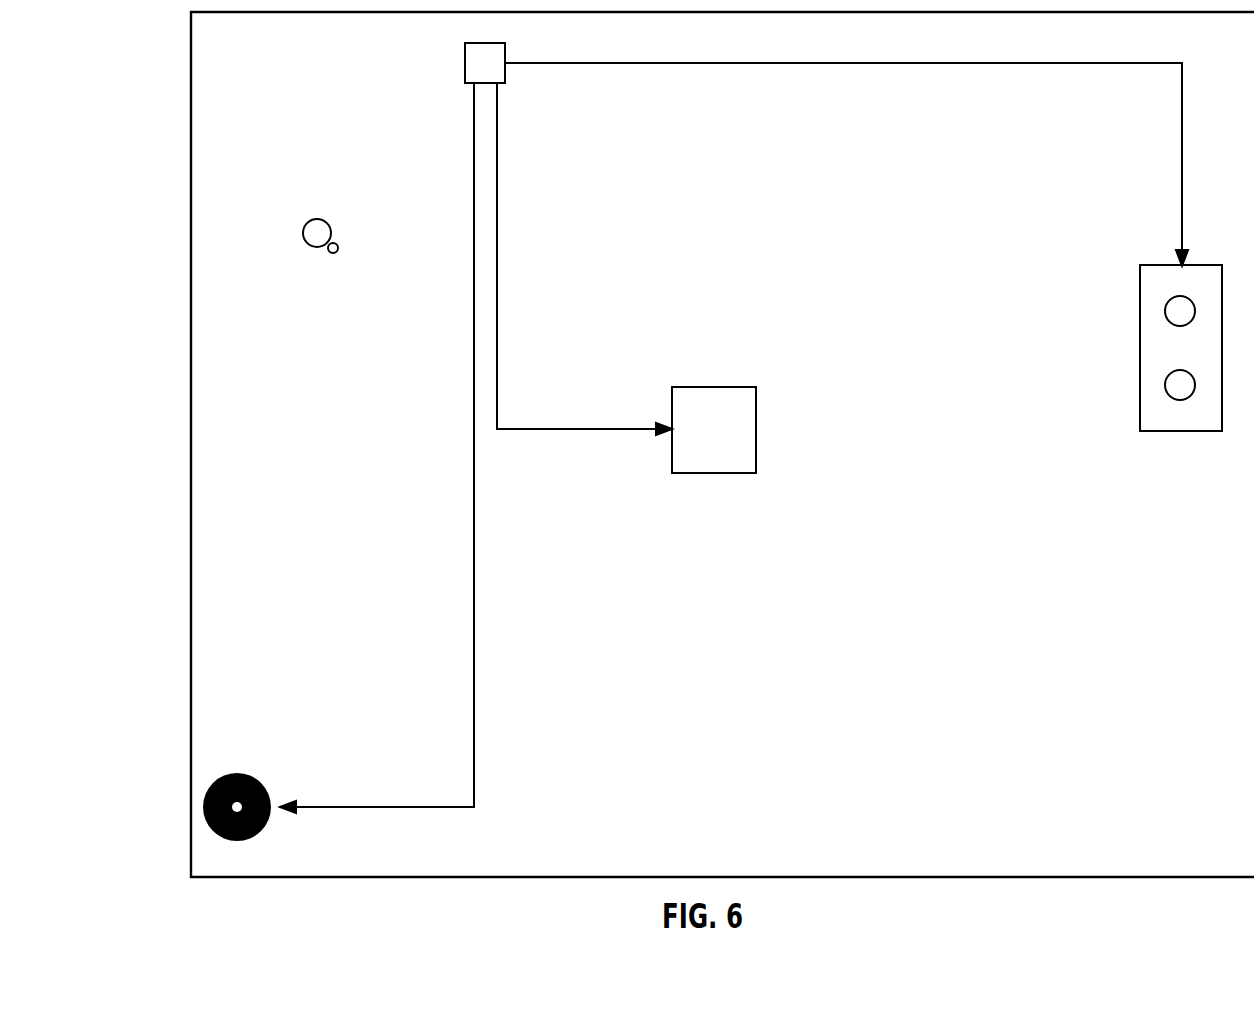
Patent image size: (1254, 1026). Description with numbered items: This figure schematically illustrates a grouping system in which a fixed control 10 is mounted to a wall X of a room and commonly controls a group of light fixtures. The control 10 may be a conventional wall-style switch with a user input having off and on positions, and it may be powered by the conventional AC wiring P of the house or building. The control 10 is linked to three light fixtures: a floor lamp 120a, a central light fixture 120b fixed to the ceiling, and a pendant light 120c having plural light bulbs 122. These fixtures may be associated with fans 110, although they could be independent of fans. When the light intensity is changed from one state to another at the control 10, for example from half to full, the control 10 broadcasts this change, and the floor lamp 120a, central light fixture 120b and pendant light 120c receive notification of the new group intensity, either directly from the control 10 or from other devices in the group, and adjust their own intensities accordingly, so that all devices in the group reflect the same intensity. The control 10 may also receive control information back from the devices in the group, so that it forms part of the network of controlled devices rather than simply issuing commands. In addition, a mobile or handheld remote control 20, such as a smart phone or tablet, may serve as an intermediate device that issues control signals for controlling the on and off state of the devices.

The control 10 is at (465, 61).
The fans 110 is at (421, 55).
The floor lamp 120a is at (240, 772).
The central light fixture 120b is at (713, 473).
The pendant light 120c is at (1144, 384).
The light bulbs 122 is at (1164, 311).
The remote control 20 is at (337, 254).
The AC wiring P is at (316, 220).
The wall X is at (191, 124).